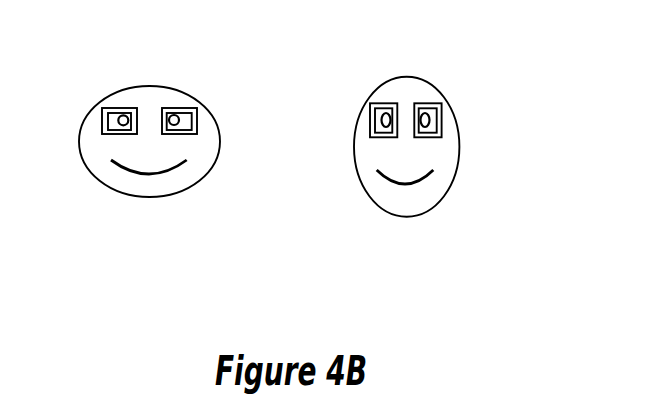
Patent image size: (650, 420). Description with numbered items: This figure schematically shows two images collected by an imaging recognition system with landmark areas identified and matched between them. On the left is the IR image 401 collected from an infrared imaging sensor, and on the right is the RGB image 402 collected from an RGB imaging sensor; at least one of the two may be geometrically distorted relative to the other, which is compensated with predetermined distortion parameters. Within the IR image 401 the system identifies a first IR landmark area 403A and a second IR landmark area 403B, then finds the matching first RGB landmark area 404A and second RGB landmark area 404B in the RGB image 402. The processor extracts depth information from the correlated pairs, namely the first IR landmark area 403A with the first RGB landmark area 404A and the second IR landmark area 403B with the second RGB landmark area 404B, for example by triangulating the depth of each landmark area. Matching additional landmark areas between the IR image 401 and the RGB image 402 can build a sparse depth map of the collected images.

The IR image 401 is at (168, 270).
The RGB image 402 is at (424, 270).
The first IR landmark area 403A is at (112, 107).
The second IR landmark area 403B is at (183, 107).
The first RGB landmark area 404A is at (382, 102).
The second RGB landmark area 404B is at (425, 102).